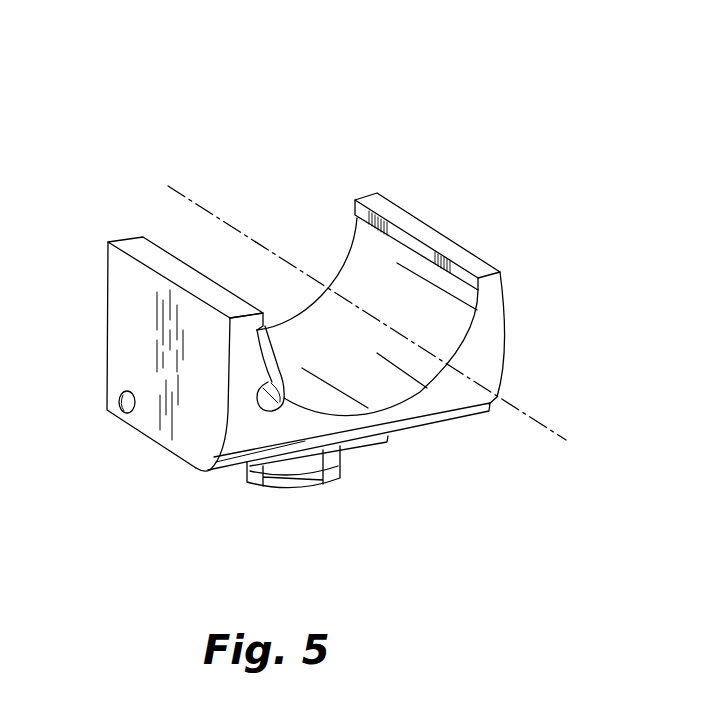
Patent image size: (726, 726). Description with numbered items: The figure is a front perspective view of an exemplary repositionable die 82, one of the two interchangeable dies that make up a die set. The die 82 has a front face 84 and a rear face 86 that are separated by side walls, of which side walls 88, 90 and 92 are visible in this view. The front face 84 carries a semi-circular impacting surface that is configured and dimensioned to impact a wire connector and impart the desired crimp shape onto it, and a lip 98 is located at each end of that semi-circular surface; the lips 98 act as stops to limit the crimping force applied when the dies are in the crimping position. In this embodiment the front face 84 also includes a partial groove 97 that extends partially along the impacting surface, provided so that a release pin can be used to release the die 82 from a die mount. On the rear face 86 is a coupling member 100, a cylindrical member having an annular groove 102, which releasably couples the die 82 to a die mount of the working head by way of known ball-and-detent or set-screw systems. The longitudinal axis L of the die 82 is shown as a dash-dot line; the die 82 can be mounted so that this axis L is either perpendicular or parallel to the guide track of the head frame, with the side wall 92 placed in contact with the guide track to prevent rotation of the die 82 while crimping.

The die 82 is at (321, 291).
The front face 84 is at (308, 262).
The rear face 86 is at (385, 463).
The side wall 88 is at (107, 347).
The side wall 90 is at (508, 297).
The side wall 92 is at (495, 355).
The partial groove 97 is at (283, 370).
The lip 98 is at (135, 243).
The coupling member 100 is at (270, 490).
The annular groove 102 is at (312, 478).
The longitudinal axis L is at (374, 313).